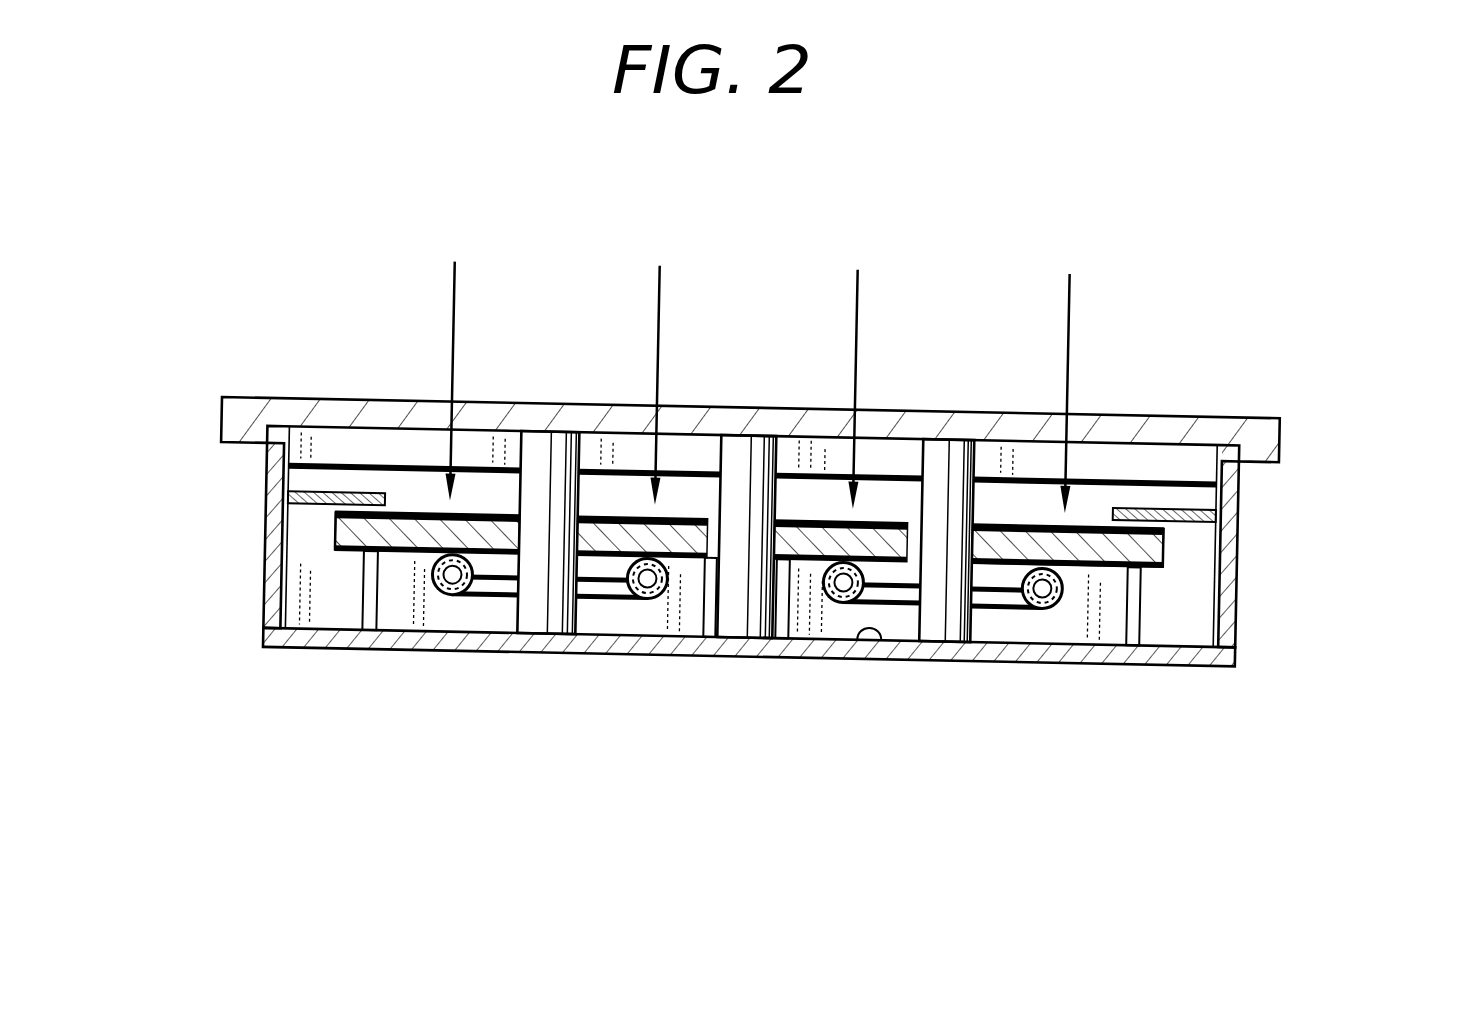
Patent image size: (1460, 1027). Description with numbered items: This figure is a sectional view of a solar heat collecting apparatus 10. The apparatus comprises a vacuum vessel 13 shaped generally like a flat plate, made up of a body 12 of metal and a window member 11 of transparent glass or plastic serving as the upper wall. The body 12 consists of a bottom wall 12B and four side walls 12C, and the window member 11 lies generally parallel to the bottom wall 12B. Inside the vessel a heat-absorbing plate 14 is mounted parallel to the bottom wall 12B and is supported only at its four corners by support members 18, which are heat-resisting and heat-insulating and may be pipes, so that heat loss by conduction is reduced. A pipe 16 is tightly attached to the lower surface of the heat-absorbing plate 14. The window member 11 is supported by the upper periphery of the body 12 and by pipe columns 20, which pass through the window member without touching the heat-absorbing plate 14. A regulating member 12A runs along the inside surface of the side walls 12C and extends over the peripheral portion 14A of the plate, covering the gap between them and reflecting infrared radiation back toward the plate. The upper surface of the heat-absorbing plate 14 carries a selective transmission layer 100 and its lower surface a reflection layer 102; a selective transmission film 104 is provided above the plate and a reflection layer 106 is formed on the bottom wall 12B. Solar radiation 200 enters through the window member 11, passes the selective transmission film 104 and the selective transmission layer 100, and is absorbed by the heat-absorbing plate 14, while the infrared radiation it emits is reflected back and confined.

The solar heat collecting apparatus 10 is at (1228, 284).
The window member 11 is at (1282, 427).
The body 12 is at (1237, 532).
The regulating member 12A is at (268, 513).
The bottom wall 12B is at (438, 648).
The side walls 12C is at (1236, 493).
The vacuum vessel 13 is at (1400, 372).
The heat-absorbing plate 14 is at (679, 575).
The peripheral portion 14A is at (337, 530).
The pipe 16 is at (597, 607).
The support members 18 is at (352, 598).
The pipe columns 20 is at (937, 617).
The selective transmission layer 100 is at (873, 523).
The reflection layer 102 is at (815, 556).
The selective transmission film 104 is at (843, 440).
The reflection layer 106 is at (870, 640).
The solar radiation 200 is at (1068, 352).